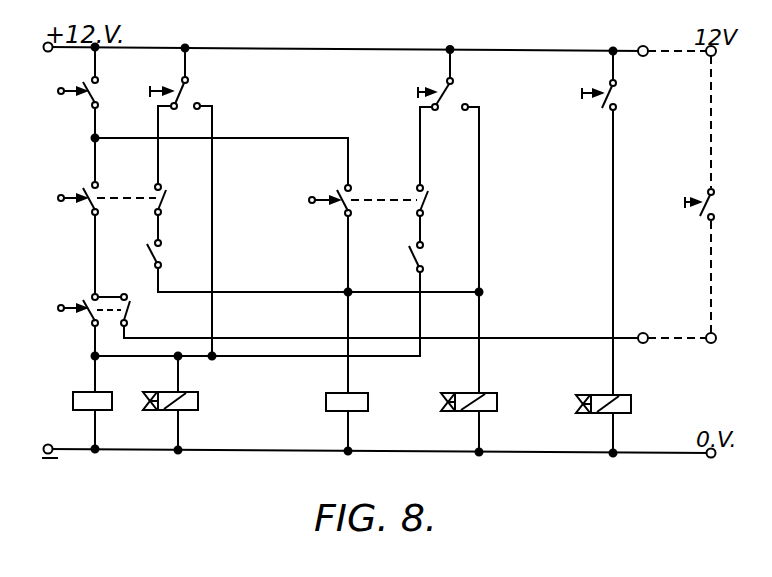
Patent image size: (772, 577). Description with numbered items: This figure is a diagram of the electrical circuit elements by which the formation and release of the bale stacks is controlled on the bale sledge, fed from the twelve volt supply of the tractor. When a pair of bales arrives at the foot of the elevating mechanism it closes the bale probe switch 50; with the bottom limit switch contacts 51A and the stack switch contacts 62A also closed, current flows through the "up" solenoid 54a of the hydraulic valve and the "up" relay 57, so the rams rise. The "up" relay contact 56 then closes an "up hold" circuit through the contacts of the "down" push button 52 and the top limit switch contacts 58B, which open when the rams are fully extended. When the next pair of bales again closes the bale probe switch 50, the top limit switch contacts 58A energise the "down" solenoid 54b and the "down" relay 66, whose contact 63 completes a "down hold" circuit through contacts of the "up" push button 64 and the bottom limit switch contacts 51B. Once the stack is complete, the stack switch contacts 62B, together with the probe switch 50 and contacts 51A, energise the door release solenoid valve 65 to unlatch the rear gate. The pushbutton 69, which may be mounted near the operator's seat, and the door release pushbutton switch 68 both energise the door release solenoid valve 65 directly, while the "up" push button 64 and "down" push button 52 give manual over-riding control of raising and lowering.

The bale probe switch 50 is at (88, 98).
The "up" push button 64 is at (160, 97).
The "down" push button 52 is at (442, 86).
The door release pushbutton switch 68 is at (604, 101).
The pushbutton 69 is at (699, 206).
The contacts of bottom limit switch 51A is at (88, 209).
The bottom limit switch contacts 51B is at (170, 193).
The ram top limit switch contacts 58A is at (340, 207).
The contacts of top limit switch 58B is at (434, 194).
The contact of "down" relay 63 is at (150, 256).
The contact of "up" relay 56 is at (410, 260).
The contacts of stack switch 62A is at (86, 314).
The stack switch contacts 62B is at (130, 310).
The "up" relay 57 is at (92, 410).
The "up" solenoid 54a is at (168, 409).
The "down" relay 66 is at (338, 412).
The "down" solenoid 54b is at (468, 412).
The door release solenoid valve 65 is at (592, 413).